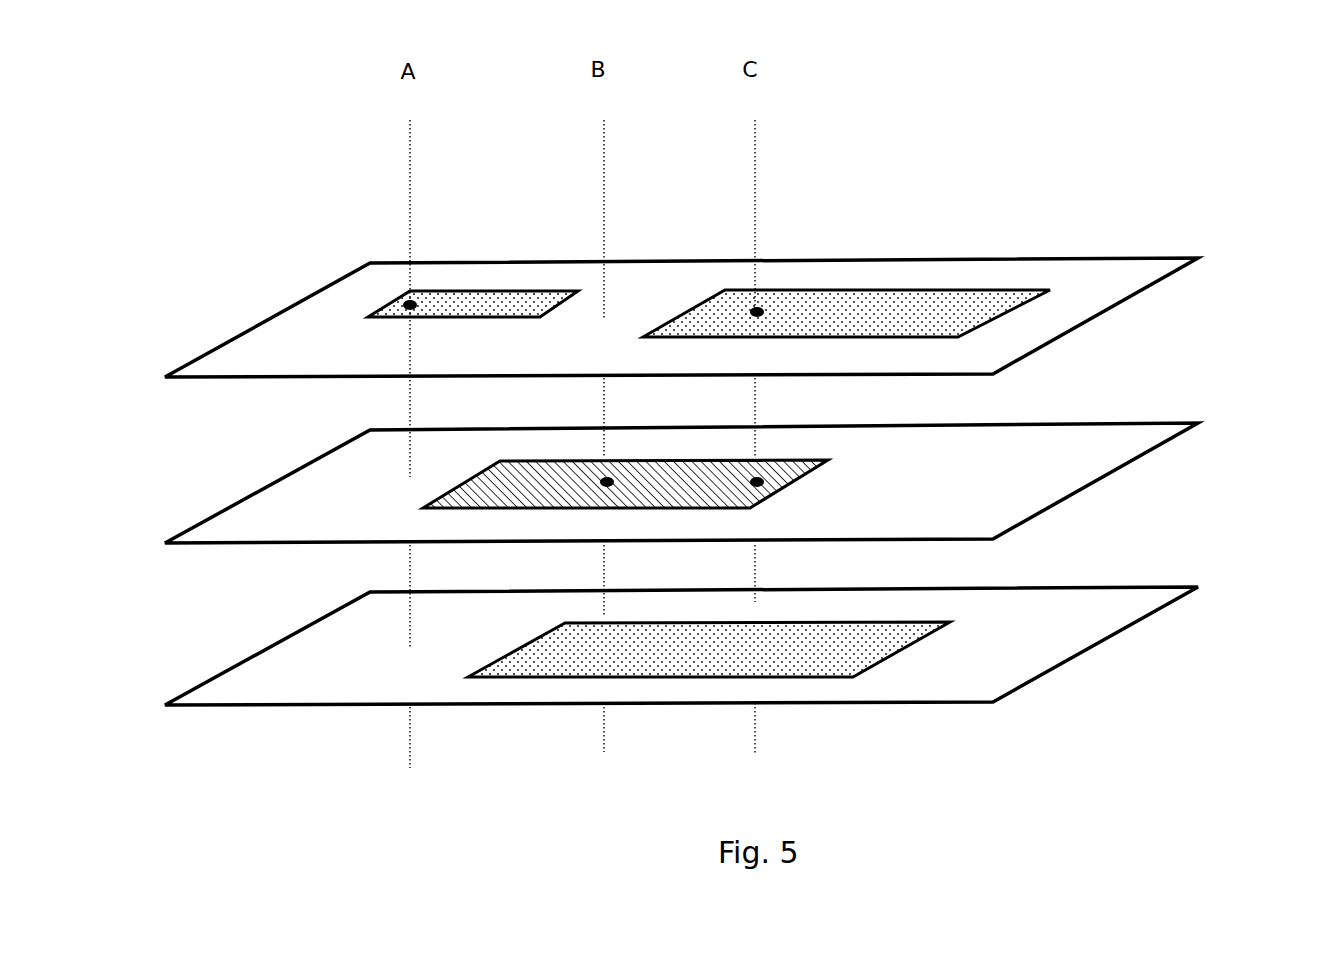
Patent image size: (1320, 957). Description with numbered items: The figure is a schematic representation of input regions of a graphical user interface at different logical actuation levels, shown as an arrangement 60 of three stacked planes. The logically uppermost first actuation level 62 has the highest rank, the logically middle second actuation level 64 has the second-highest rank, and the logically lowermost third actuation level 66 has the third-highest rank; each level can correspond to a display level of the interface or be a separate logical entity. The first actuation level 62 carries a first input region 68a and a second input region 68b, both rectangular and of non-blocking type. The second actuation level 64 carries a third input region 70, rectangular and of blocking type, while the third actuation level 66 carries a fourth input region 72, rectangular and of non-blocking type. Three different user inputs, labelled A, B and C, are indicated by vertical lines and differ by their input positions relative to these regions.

The sensor stack 60 is at (255, 128).
The first actuation level 62 is at (1100, 317).
The second actuation level 64 is at (1100, 481).
The third actuation level 66 is at (1095, 645).
The first input region 68a is at (484, 305).
The second input region 68b is at (857, 300).
The third input region 70 is at (667, 462).
The fourth input region 72 is at (583, 650).